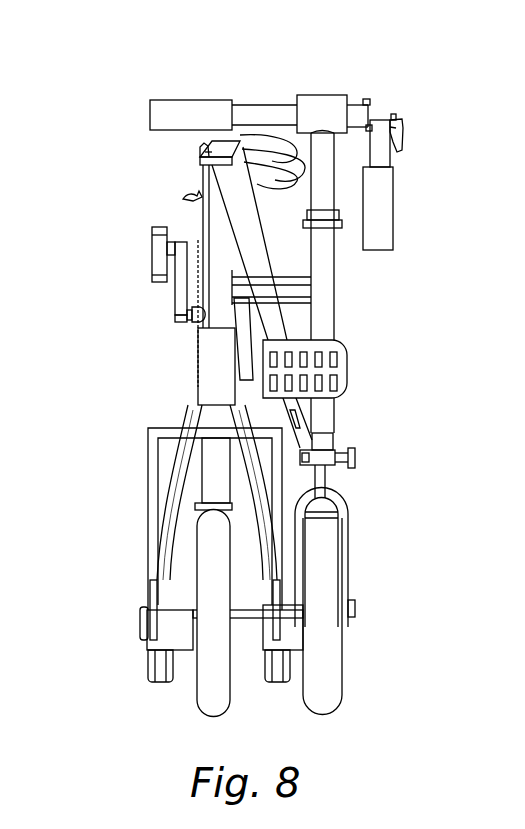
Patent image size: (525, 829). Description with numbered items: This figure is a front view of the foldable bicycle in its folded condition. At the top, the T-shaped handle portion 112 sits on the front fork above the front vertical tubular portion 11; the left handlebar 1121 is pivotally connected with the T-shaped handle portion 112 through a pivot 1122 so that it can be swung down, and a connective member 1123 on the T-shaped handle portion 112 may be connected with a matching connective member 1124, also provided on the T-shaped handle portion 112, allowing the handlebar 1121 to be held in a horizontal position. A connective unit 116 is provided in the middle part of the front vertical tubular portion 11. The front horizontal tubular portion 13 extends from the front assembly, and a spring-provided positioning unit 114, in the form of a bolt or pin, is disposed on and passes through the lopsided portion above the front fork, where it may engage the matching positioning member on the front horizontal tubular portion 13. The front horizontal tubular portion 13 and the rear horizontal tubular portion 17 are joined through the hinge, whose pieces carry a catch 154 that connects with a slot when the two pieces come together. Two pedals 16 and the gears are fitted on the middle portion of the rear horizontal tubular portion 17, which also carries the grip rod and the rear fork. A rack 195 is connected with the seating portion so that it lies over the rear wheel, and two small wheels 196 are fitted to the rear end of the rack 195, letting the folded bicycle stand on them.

The front vertical tubular portion 11 is at (327, 176).
The T-shaped handle portion 112 is at (275, 110).
The left handlebar 1121 is at (152, 113).
The pivot 1122 is at (371, 126).
The connective member 1123 is at (400, 136).
The matching connective member 1124 is at (366, 99).
The front horizontal tubular portion 13 is at (280, 304).
The positioning unit 114 is at (358, 452).
The connective unit 116 is at (310, 280).
The catch 154 is at (200, 156).
The pedals 16 is at (157, 261).
The rear horizontal tubular portion 17 is at (220, 383).
The rack 195 is at (148, 462).
The small wheels 196 is at (150, 660).